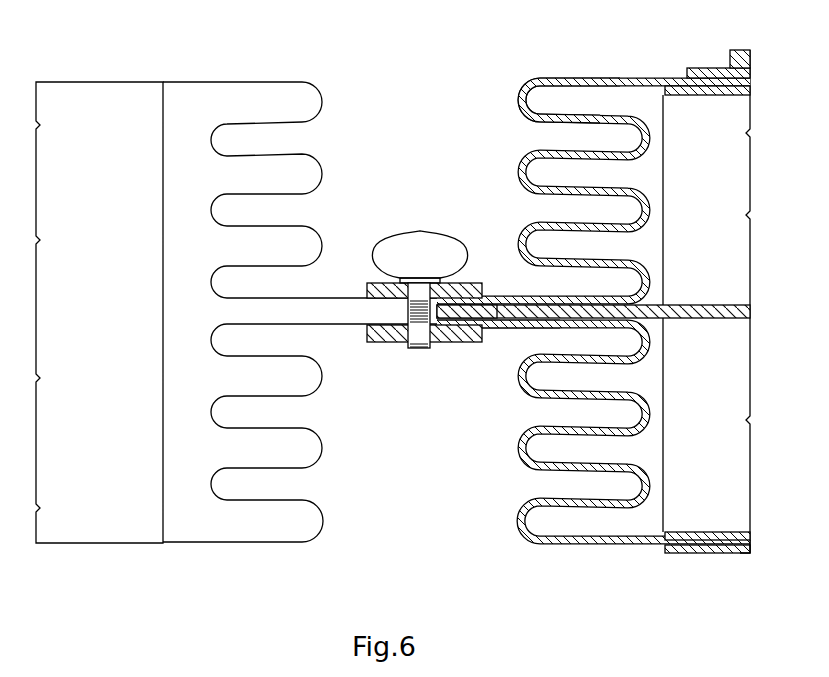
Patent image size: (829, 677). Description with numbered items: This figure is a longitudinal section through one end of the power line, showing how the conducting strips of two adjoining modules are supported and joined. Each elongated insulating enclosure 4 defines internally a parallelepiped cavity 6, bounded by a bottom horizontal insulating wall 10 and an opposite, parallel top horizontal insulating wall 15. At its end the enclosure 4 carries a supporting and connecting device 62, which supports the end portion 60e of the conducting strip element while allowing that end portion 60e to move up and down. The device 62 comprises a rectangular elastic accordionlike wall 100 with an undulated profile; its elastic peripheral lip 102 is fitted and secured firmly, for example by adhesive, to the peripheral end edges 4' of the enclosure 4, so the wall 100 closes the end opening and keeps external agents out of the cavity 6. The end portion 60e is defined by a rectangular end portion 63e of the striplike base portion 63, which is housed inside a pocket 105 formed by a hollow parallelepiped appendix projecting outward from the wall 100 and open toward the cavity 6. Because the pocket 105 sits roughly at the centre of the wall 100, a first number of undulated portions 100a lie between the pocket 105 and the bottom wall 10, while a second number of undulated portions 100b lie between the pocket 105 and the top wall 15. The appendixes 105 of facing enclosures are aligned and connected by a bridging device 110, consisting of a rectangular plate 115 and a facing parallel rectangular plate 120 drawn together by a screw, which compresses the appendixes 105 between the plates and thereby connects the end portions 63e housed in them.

The insulating enclosure 4 is at (99, 281).
The peripheral end edges 4' is at (707, 313).
The cavity 6 is at (701, 209).
The bottom horizontal insulating wall 10 is at (750, 548).
The top horizontal insulating wall 15 is at (745, 90).
The supporting and connecting device 62 is at (510, 116).
The striplike base portion 63 is at (713, 315).
The rectangular end portion 63e is at (503, 303).
The end portion 60e is at (521, 342).
The elastic accordionlike wall 100 is at (581, 311).
The undulated portions 100a is at (560, 414).
The undulated portions 100b is at (560, 137).
The elastic peripheral lip 102 is at (678, 80).
The pocket 105 is at (305, 296).
The bridging device 110 is at (420, 230).
The rectangular plate 115 is at (372, 288).
The rectangular plate 120 is at (386, 342).